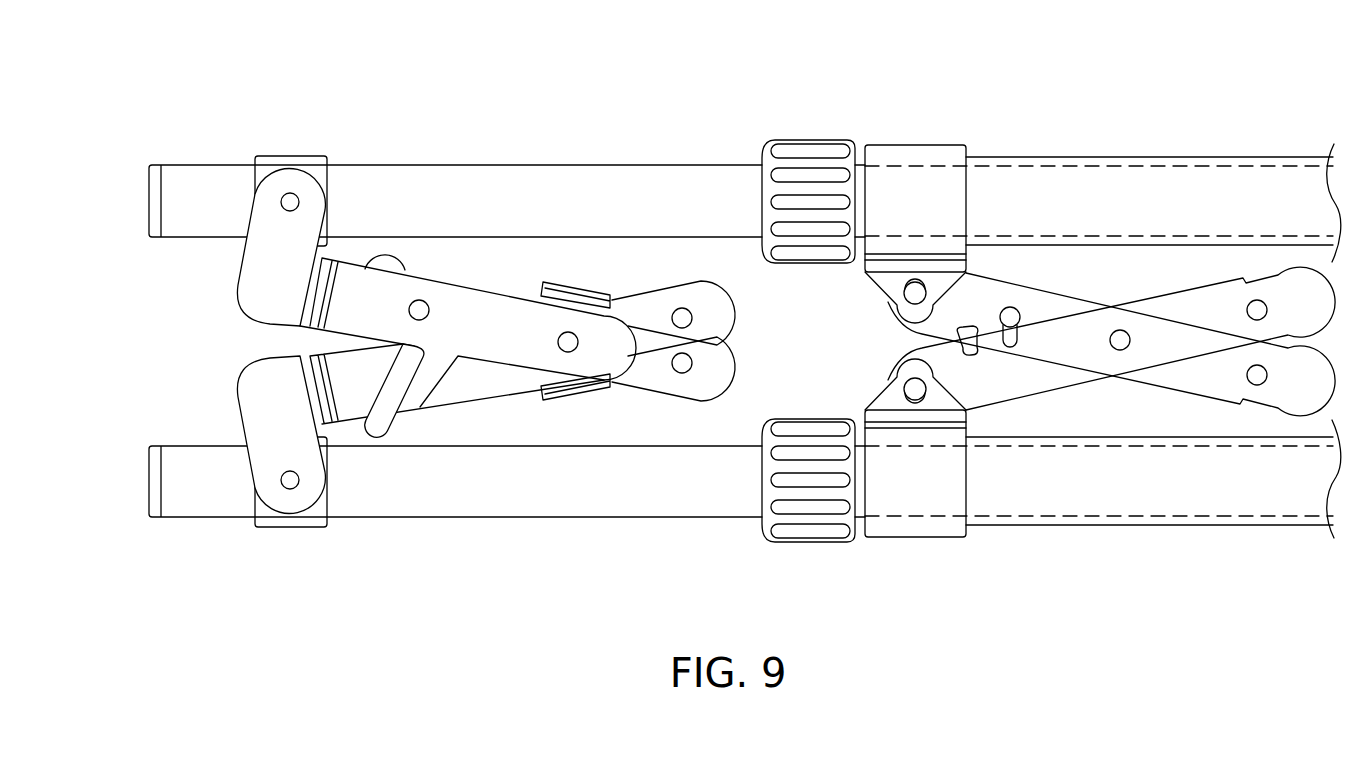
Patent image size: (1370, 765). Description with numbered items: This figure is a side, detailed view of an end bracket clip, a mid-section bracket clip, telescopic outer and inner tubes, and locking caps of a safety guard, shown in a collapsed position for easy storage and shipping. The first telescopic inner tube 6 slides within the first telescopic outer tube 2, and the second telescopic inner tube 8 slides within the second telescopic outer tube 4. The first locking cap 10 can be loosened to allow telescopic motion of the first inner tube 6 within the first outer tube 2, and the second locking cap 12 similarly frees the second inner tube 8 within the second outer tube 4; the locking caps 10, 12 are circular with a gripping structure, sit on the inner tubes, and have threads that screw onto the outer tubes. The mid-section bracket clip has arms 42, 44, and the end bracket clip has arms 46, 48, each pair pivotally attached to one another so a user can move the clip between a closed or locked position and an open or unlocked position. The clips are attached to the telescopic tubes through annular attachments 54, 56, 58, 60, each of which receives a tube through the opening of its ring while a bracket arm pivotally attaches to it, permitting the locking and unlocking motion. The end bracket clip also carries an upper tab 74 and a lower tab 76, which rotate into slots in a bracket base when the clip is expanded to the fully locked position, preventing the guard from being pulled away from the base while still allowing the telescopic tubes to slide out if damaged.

The first telescopic outer tube 2 is at (1130, 156).
The second telescopic outer tube 4 is at (1130, 527).
The first telescopic inner tube 6 is at (556, 166).
The second telescopic inner tube 8 is at (556, 516).
The first locking cap 10 is at (808, 142).
The second locking cap 12 is at (808, 540).
The arm 42 is at (1040, 302).
The arm 44 is at (1048, 365).
The arm 46 is at (482, 312).
The arm 48 is at (480, 370).
The annular attachment 54 is at (920, 145).
The annular attachment 56 is at (917, 537).
The annular attachment 58 is at (286, 157).
The annular attachment 60 is at (286, 527).
The upper tab 74 is at (392, 430).
The lower tab 76 is at (390, 258).